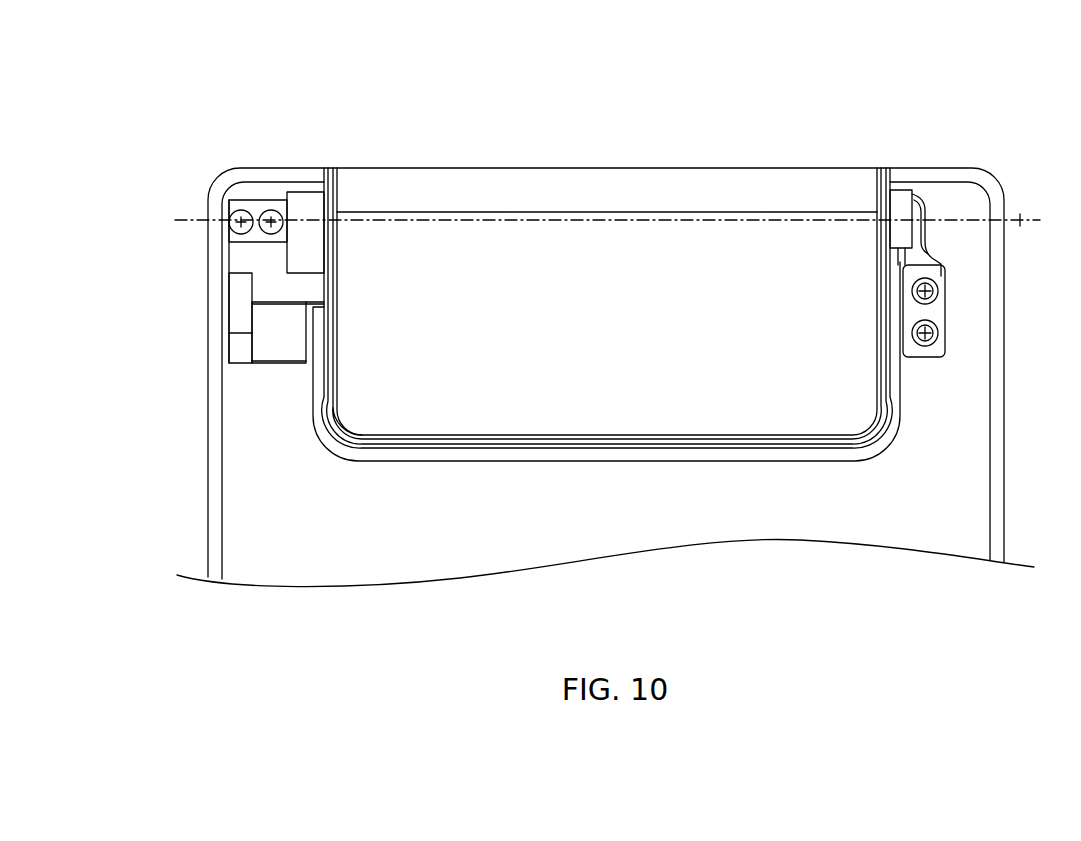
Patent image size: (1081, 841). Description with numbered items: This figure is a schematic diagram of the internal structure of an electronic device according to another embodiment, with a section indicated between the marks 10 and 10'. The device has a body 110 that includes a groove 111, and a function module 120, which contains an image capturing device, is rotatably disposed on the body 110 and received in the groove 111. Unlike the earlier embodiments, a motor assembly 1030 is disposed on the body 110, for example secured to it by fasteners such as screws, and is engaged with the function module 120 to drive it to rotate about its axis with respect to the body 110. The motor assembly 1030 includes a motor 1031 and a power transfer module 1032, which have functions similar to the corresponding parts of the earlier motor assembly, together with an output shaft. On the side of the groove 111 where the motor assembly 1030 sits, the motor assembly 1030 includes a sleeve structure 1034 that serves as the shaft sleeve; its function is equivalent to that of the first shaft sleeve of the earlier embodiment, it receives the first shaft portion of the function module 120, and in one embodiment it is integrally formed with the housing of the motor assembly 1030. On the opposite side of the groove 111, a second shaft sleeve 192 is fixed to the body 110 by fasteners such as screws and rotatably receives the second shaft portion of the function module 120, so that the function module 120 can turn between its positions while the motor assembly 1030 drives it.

The section line indicator 10 is at (603, 180).
The section line indicator 10' is at (1035, 183).
The body 110 is at (997, 470).
The groove 111 is at (534, 462).
The function module 120 is at (647, 118).
The second shaft sleeve 192 is at (936, 300).
The motor assembly 1030 is at (217, 248).
The motor 1031 is at (262, 349).
The power transfer module 1032 is at (235, 297).
The sleeve structure 1034 is at (305, 195).